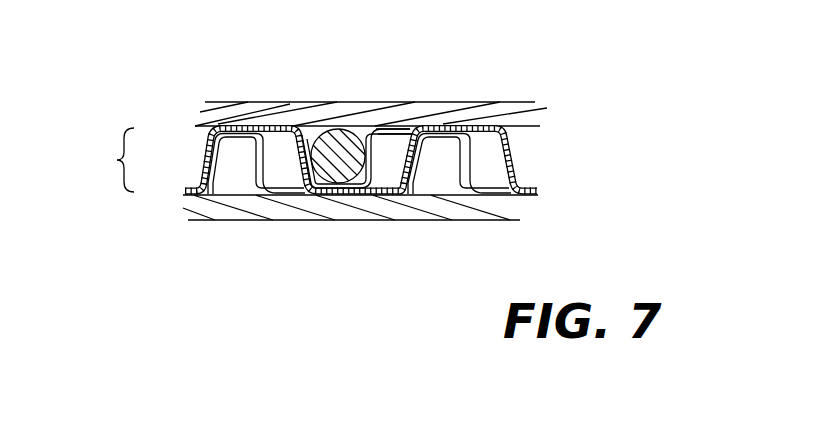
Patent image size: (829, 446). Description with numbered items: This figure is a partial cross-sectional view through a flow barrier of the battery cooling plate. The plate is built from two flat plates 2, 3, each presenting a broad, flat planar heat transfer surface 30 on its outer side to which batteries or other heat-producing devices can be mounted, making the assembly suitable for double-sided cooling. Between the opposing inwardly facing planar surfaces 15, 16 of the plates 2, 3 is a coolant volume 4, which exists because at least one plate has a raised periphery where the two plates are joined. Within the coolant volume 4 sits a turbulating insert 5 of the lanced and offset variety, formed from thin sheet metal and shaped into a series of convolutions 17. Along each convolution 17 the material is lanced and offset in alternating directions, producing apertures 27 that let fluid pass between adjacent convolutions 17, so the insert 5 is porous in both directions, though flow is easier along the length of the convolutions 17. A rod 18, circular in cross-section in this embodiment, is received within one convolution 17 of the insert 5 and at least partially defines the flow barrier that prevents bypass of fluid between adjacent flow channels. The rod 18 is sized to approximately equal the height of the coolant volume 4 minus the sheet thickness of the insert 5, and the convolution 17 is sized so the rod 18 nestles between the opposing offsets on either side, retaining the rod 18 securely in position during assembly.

The plate 2 is at (439, 138).
The plate 3 is at (512, 208).
The coolant volume 4 is at (114, 160).
The turbulating insert 5 is at (200, 155).
The inwardly facing planar surface 15 is at (530, 118).
The inwardly facing planar surface 16 is at (229, 192).
The convolution 17 is at (324, 133).
The rod 18 is at (343, 142).
The aperture 27 is at (390, 163).
The heat transfer surface 30 is at (452, 103).